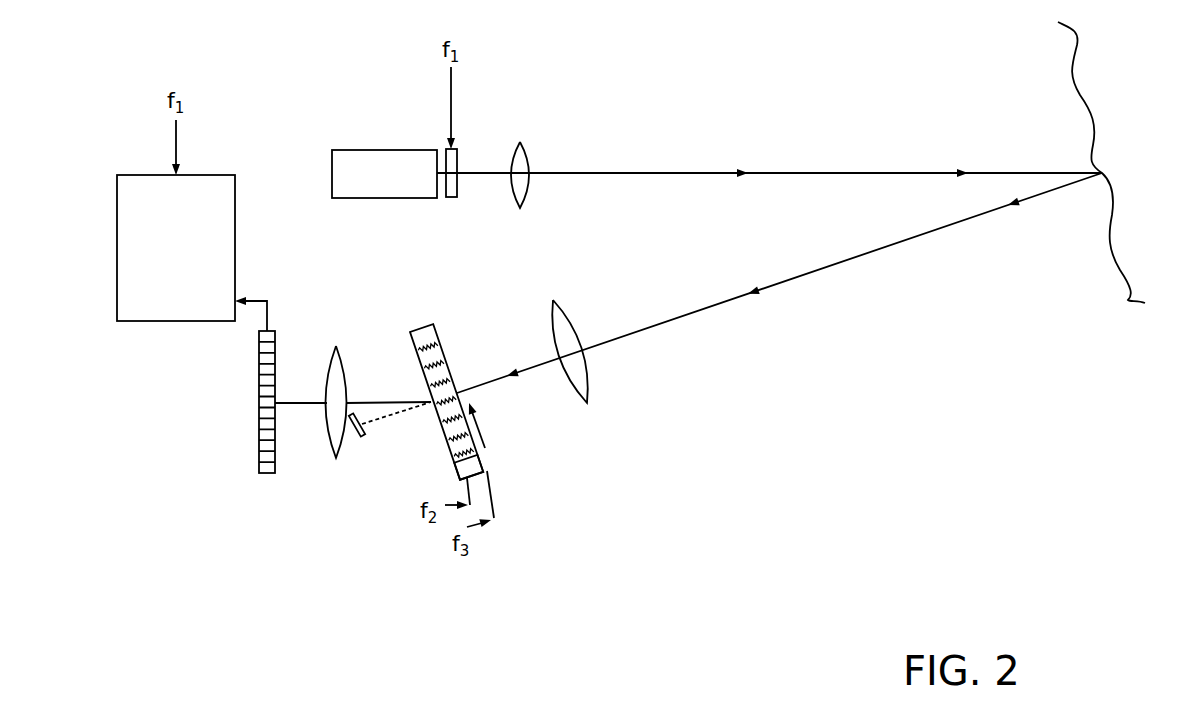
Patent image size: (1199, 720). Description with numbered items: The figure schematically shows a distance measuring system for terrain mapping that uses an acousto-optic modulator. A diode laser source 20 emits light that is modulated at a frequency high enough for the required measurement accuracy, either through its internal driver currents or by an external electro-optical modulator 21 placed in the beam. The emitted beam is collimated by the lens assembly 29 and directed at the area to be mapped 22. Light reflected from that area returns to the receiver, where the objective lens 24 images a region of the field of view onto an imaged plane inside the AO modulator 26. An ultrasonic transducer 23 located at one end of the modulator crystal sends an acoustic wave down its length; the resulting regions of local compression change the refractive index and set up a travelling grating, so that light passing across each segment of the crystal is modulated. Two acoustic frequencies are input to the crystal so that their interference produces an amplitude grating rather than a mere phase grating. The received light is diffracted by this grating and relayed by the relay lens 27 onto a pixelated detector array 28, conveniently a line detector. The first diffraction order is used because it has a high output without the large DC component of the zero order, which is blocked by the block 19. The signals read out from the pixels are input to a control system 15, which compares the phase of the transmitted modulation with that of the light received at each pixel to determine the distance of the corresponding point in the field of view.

The control system 15 is at (117, 255).
The zero order block 19 is at (364, 440).
The diode laser source 20 is at (370, 150).
The external electro-optical modulator 21 is at (457, 197).
The area to be mapped 22 is at (1110, 178).
The ultrasonic transducer 23 is at (484, 471).
The objective lens 24 is at (587, 403).
The AO modulator 26 is at (412, 331).
The relay lens 27 is at (336, 458).
The pixelated detector array 28 is at (267, 474).
The lens assembly 29 is at (520, 142).